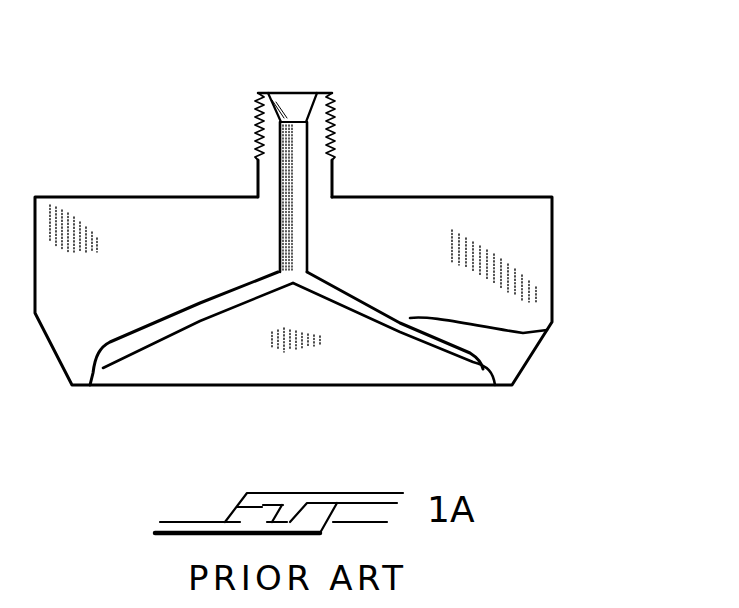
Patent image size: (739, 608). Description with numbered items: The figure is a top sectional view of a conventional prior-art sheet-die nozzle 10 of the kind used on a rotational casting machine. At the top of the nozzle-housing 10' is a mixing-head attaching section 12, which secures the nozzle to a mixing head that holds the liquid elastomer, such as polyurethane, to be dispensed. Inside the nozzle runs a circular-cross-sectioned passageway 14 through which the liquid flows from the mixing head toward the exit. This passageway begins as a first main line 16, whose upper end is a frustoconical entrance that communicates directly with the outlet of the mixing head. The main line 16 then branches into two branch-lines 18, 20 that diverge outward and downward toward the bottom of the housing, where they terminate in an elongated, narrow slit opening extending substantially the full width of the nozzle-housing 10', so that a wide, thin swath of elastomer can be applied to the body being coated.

The sheet-die nozzle 10 is at (328, 201).
The nozzle-housing 10' is at (327, 255).
The mixing-head attaching section 12 is at (260, 125).
The circular-cross-sectioned passageway 14 is at (306, 125).
The first main line 16 is at (308, 195).
The branch-line 18 is at (158, 320).
The branch-line 20 is at (543, 332).